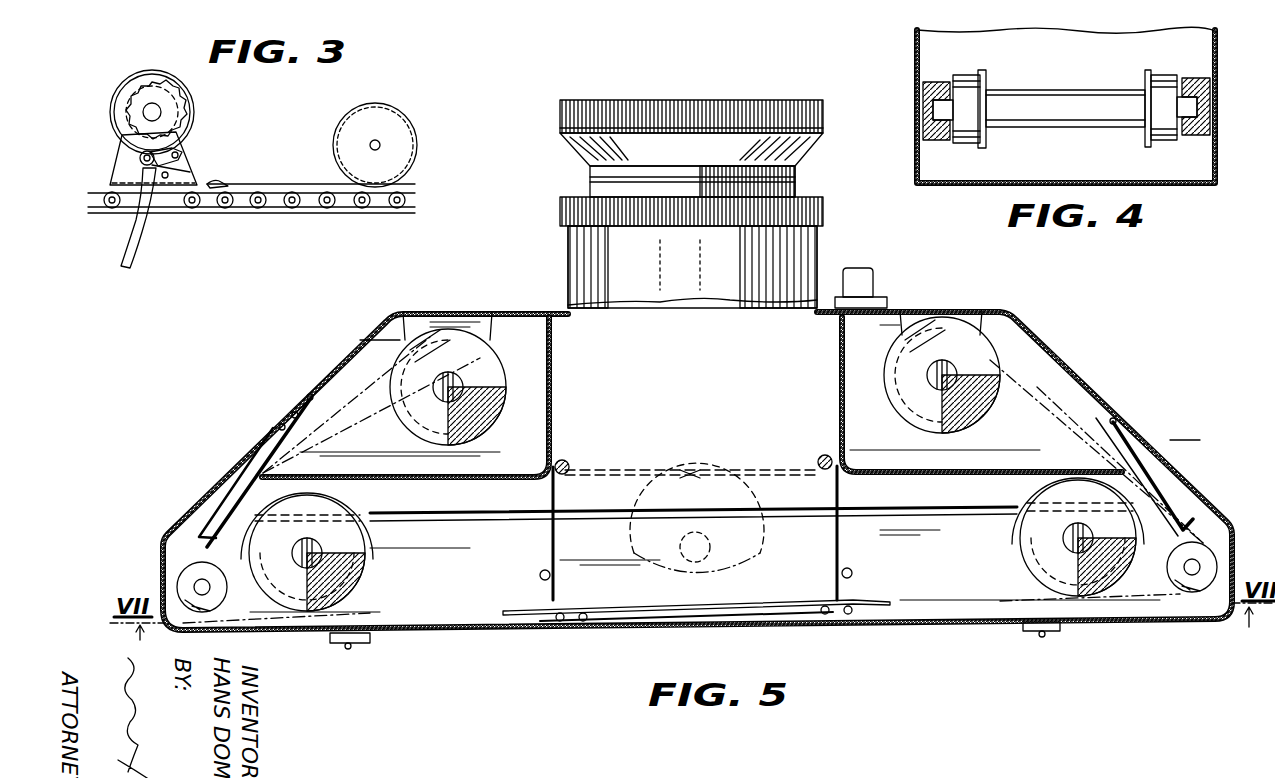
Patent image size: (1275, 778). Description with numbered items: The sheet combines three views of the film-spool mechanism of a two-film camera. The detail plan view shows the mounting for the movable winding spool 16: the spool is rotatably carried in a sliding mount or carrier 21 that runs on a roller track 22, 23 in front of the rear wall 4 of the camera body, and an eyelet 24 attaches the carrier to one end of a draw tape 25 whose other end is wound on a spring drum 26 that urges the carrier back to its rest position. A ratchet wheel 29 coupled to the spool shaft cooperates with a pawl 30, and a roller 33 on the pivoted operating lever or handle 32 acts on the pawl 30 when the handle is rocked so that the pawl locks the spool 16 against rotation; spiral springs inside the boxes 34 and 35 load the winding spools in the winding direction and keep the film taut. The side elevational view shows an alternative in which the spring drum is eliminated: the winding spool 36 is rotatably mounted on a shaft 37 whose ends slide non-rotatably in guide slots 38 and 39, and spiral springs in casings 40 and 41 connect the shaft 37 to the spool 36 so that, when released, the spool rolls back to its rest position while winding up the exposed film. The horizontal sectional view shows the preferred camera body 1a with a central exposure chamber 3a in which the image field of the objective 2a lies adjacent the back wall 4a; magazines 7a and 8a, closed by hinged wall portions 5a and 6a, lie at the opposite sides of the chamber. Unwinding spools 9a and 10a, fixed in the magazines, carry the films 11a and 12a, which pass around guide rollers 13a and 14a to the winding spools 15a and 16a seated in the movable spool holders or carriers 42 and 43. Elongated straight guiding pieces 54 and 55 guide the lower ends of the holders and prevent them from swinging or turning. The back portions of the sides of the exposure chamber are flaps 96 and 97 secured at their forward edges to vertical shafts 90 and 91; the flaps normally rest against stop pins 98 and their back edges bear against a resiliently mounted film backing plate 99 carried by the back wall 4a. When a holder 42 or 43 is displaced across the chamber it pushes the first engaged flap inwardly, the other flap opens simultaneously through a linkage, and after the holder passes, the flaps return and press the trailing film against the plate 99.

In FIG. 3, the winding spool 16 is at (130, 82).
In FIG. 3, the spring box 34 is at (183, 97).
In FIG. 3, the ratchet wheel 29 is at (124, 126).
In FIG. 3, the roller 33 is at (130, 160).
In FIG. 5, the roller 33 is at (232, 512).
In FIG. 3, the pawl 30 is at (185, 160).
In FIG. 3, the sliding mount or carrier 21 is at (196, 172).
In FIG. 3, the eyelet 24 is at (228, 183).
In FIG. 3, the draw tape 25 is at (305, 185).
In FIG. 3, the spring drum 26 is at (352, 122).
In FIG. 3, the roller track 22 is at (305, 205).
In FIG. 3, the roller track 23 is at (254, 219).
In FIG. 3, the rear wall of the camera body 4 is at (100, 214).
In FIG. 3, the operating lever or handle 32 is at (144, 250).
In FIG. 4, the guide slot 38 is at (930, 80).
In FIG. 4, the guide slot 39 is at (1190, 77).
In FIG. 5, the guide slot 39 is at (1156, 493).
In FIG. 4, the shaft 37 is at (940, 122).
In FIG. 5, the shaft 37 is at (890, 382).
In FIG. 4, the spring casing 40 is at (970, 148).
In FIG. 4, the winding spool 36 is at (1080, 125).
In FIG. 5, the winding spool 36 is at (500, 388).
In FIG. 4, the spring casing 41 is at (1170, 138).
In FIG. 5, the housing or body 1a is at (930, 297).
In FIG. 5, the objective 2a is at (806, 99).
In FIG. 5, the exposure chamber 3a is at (816, 252).
In FIG. 5, the spring box 35 is at (520, 303).
In FIG. 5, the unwinding spool 9a is at (448, 340).
In FIG. 5, the magazine 7a is at (356, 362).
In FIG. 5, the film 11a is at (350, 394).
In FIG. 5, the hinged wall portion 5a is at (270, 426).
In FIG. 5, the guide roller 13a is at (180, 584).
In FIG. 5, the back wall of the camera body 4a is at (440, 634).
In FIG. 5, the guiding piece 54 is at (360, 504).
In FIG. 5, the spool holder or carrier 42 is at (368, 542).
In FIG. 5, the winding spool 15a is at (366, 576).
In FIG. 5, the vertical shaft 90 is at (556, 466).
In FIG. 5, the vertical shaft 91 is at (834, 458).
In FIG. 5, the flap 96 is at (556, 552).
In FIG. 5, the flap 97 is at (835, 552).
In FIG. 5, the stop pin 98 is at (540, 576).
In FIG. 5, the film backing plate 99 is at (708, 608).
In FIG. 5, the unwinding spool 10a is at (990, 360).
In FIG. 5, the film 12a is at (1037, 387).
In FIG. 5, the magazine 8a is at (1114, 420).
In FIG. 5, the hinged wall portion 6a is at (1160, 445).
In FIG. 5, the guiding piece 55 is at (1040, 495).
In FIG. 5, the spool holder or carrier 43 is at (1013, 528).
In FIG. 5, the winding spool 16a is at (1030, 565).
In FIG. 5, the guide roller 14a is at (1192, 592).